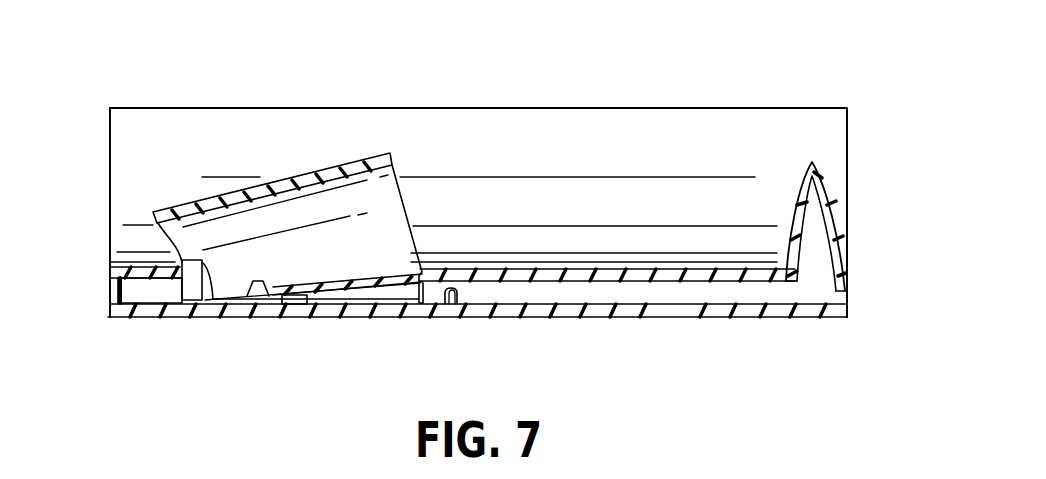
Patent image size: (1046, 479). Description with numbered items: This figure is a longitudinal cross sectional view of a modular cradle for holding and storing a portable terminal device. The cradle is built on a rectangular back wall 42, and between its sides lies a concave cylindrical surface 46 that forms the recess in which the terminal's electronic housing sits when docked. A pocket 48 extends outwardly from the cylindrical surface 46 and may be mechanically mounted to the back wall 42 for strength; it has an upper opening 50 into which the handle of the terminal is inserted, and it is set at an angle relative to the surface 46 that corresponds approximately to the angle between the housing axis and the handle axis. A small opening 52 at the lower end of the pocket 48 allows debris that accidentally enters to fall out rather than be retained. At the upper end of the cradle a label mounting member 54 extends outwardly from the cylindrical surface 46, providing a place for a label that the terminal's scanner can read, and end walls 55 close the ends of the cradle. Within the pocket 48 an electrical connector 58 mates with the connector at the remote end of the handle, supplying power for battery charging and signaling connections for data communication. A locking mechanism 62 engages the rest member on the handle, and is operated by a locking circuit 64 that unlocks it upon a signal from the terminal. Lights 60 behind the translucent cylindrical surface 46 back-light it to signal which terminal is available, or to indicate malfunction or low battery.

The back wall 42 is at (668, 318).
The concave cylindrical surface 46 is at (650, 157).
The pocket 48 is at (332, 158).
The upper opening 50 is at (398, 200).
The small opening 52 is at (160, 245).
The label mounting member 54 is at (808, 162).
The end walls 55 is at (112, 290).
The electrical connector 58 is at (213, 304).
The lights 60 is at (458, 292).
The locking mechanism 62 is at (267, 286).
The locking circuit 64 is at (287, 304).